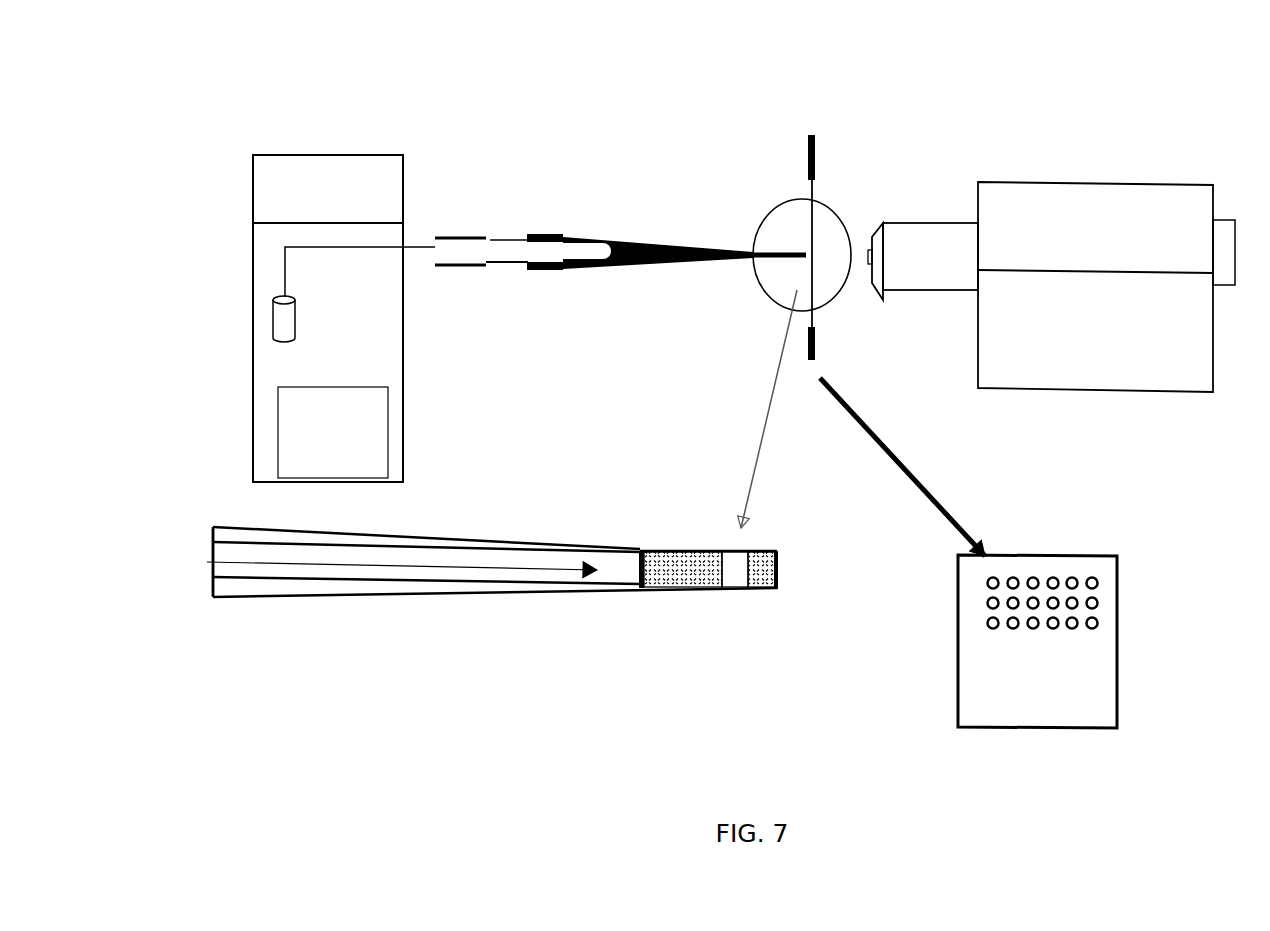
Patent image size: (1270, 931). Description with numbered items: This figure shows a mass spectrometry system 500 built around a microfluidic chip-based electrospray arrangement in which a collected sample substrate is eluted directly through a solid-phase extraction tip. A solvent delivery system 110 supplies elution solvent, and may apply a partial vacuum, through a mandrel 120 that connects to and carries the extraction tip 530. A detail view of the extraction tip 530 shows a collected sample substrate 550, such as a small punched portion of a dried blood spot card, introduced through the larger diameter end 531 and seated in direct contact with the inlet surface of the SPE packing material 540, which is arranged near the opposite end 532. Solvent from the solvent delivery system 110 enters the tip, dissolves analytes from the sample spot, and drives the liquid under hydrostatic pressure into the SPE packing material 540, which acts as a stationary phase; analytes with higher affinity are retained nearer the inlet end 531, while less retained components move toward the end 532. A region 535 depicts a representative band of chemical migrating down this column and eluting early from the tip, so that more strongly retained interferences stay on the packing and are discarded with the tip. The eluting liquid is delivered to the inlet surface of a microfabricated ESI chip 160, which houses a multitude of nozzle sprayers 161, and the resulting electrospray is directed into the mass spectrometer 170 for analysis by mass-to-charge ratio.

The mass spectrometry system 500 is at (503, 180).
The solvent delivery system 110 is at (248, 403).
The mandrel 120 is at (460, 272).
The extraction tip 530 is at (658, 244).
The larger diameter end 531 is at (222, 604).
The end of extraction tip 532 is at (775, 592).
The region 535 is at (714, 600).
The SPE packing material 540 is at (674, 548).
The collected sample substrate 550 is at (636, 566).
The microfabricated ESI chip 160 is at (805, 160).
The nozzle sprayers 161 is at (1072, 576).
The mass spectrometer 170 is at (1057, 180).